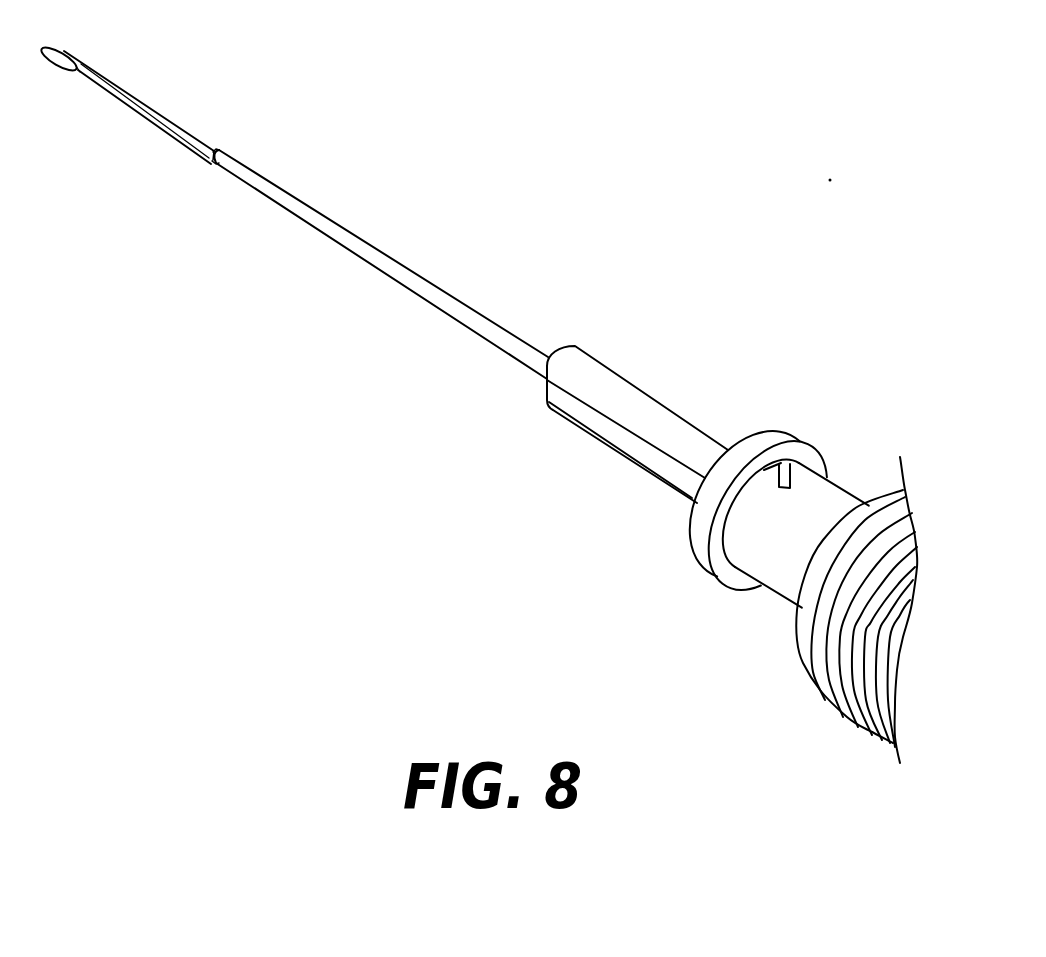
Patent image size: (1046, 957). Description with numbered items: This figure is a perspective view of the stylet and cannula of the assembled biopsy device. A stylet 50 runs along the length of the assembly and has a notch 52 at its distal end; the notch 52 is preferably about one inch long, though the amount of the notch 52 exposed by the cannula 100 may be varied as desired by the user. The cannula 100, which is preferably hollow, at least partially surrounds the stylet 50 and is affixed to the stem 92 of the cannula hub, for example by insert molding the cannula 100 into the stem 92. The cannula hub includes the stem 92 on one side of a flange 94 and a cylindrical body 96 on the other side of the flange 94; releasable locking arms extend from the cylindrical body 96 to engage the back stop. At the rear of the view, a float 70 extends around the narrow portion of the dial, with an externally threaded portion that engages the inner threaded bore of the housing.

The notch 52 is at (168, 104).
The stylet 50 is at (219, 150).
The cannula 100 is at (352, 240).
The stem 92 is at (583, 372).
The flange 94 is at (768, 430).
The cylindrical body 96 is at (772, 582).
The float 70 is at (850, 727).